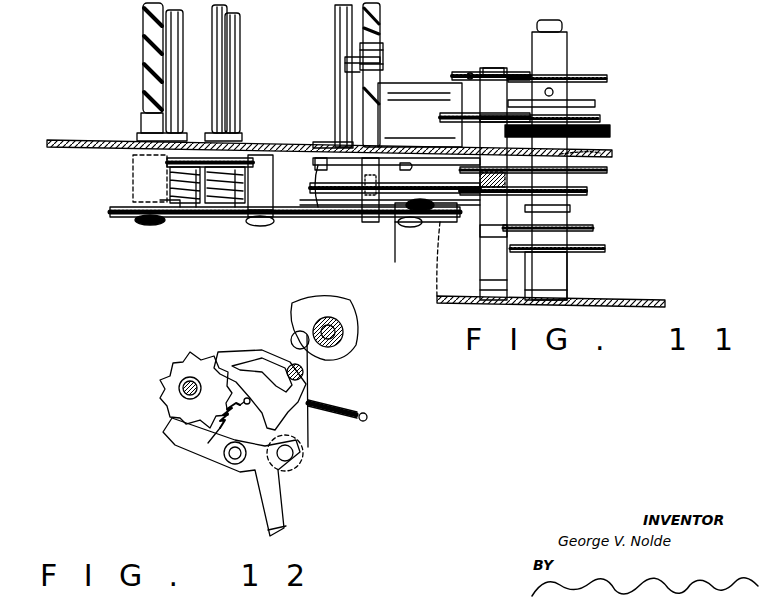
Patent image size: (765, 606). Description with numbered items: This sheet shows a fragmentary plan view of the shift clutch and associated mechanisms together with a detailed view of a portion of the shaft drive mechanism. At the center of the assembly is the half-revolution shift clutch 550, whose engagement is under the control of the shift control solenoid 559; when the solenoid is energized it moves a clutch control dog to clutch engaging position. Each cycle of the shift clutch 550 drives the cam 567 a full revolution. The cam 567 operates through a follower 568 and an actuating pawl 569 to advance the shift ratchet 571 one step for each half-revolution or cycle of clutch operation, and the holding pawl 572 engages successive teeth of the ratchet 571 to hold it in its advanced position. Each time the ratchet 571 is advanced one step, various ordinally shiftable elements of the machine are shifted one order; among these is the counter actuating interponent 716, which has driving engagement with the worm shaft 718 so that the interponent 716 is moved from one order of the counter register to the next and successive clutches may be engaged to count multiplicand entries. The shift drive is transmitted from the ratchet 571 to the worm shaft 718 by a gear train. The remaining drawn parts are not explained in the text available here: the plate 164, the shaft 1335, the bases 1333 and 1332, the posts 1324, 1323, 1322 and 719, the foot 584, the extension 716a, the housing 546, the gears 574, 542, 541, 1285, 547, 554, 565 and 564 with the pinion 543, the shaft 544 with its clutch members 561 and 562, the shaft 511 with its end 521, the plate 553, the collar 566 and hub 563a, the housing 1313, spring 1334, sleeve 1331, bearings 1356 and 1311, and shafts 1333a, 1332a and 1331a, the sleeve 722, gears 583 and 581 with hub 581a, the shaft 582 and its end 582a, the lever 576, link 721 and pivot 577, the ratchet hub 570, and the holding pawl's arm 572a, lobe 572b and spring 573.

In FIG. 11, the base plate 164 is at (72, 140).
In FIG. 11, the helical shaft 1335 is at (143, 66).
In FIG. 11, the bearing base 1333 is at (160, 140).
In FIG. 11, the post 1324 is at (176, 70).
In FIG. 11, the post 1323 is at (219, 14).
In FIG. 11, the post 1322 is at (233, 27).
In FIG. 11, the bearing base 1332 is at (201, 135).
In FIG. 11, the post 719 is at (346, 18).
In FIG. 11, the bracket foot 584 is at (318, 142).
In FIG. 11, the worm shaft 718 is at (378, 12).
In FIG. 11, the shift control solenoid 559 is at (388, 95).
In FIG. 11, the interponent 716 is at (372, 55).
In FIG. 11, the arm extension 716a is at (348, 60).
In FIG. 11, the housing 546 is at (420, 115).
In FIG. 11, the gear 574 is at (423, 147).
In FIG. 11, the shaft 544 is at (492, 70).
In FIG. 11, the gear 542 is at (455, 75).
In FIG. 11, the pinion 543 is at (482, 72).
In FIG. 11, the clutch member 561 is at (494, 196).
In FIG. 11, the clutch member 562 is at (470, 225).
In FIG. 11, the shaft 511 is at (558, 52).
In FIG. 11, the shaft C 521 is at (560, 25).
In FIG. 12, the shaft C 521 is at (343, 324).
In FIG. 11, the gear 541 is at (605, 80).
In FIG. 11, the gear 1285 is at (595, 103).
In FIG. 11, the gear 547 is at (600, 118).
In FIG. 11, the shift clutch 550 is at (718, 139).
In FIG. 11, the plate 553 is at (603, 153).
In FIG. 11, the gear 554 is at (608, 170).
In FIG. 11, the cam 567 is at (587, 191).
In FIG. 12, the cam 567 is at (356, 338).
In FIG. 11, the collar 566 is at (570, 208).
In FIG. 11, the gear 565 is at (595, 228).
In FIG. 11, the gear 564 is at (605, 251).
In FIG. 11, the hub 563a is at (560, 270).
In FIG. 12, the hub 563a is at (337, 349).
In FIG. 11, the housing 1313 is at (128, 192).
In FIG. 11, the spring 1334 is at (165, 167).
In FIG. 11, the sleeve 1331 is at (268, 186).
In FIG. 11, the bearing 1356 is at (118, 214).
In FIG. 11, the bearing 1311 is at (256, 226).
In FIG. 11, the shaft end 1333a is at (178, 217).
In FIG. 11, the shaft 1332a is at (198, 217).
In FIG. 11, the shaft 1331a is at (236, 217).
In FIG. 11, the shift ratchet 571 is at (320, 175).
In FIG. 12, the shift ratchet 571 is at (170, 371).
In FIG. 11, the sleeve 722 is at (370, 225).
In FIG. 11, the gear 583 is at (333, 217).
In FIG. 11, the shaft 582 is at (318, 217).
In FIG. 11, the shaft end 582a is at (326, 217).
In FIG. 11, the gear 581 is at (428, 222).
In FIG. 11, the hub 581a is at (396, 226).
In FIG. 11, the lever 576 is at (396, 262).
In FIG. 11, the link 721 is at (454, 223).
In FIG. 11, the pivot 577 is at (453, 287).
In FIG. 12, the hub 570 is at (183, 391).
In FIG. 12, the actuating pawl 569 is at (257, 358).
In FIG. 12, the holding pawl 572 is at (178, 437).
In FIG. 12, the lever arm 572a is at (275, 535).
In FIG. 12, the lever lobe 572b is at (302, 447).
In FIG. 12, the spring 573 is at (230, 406).
In FIG. 12, the follower 568 is at (308, 418).